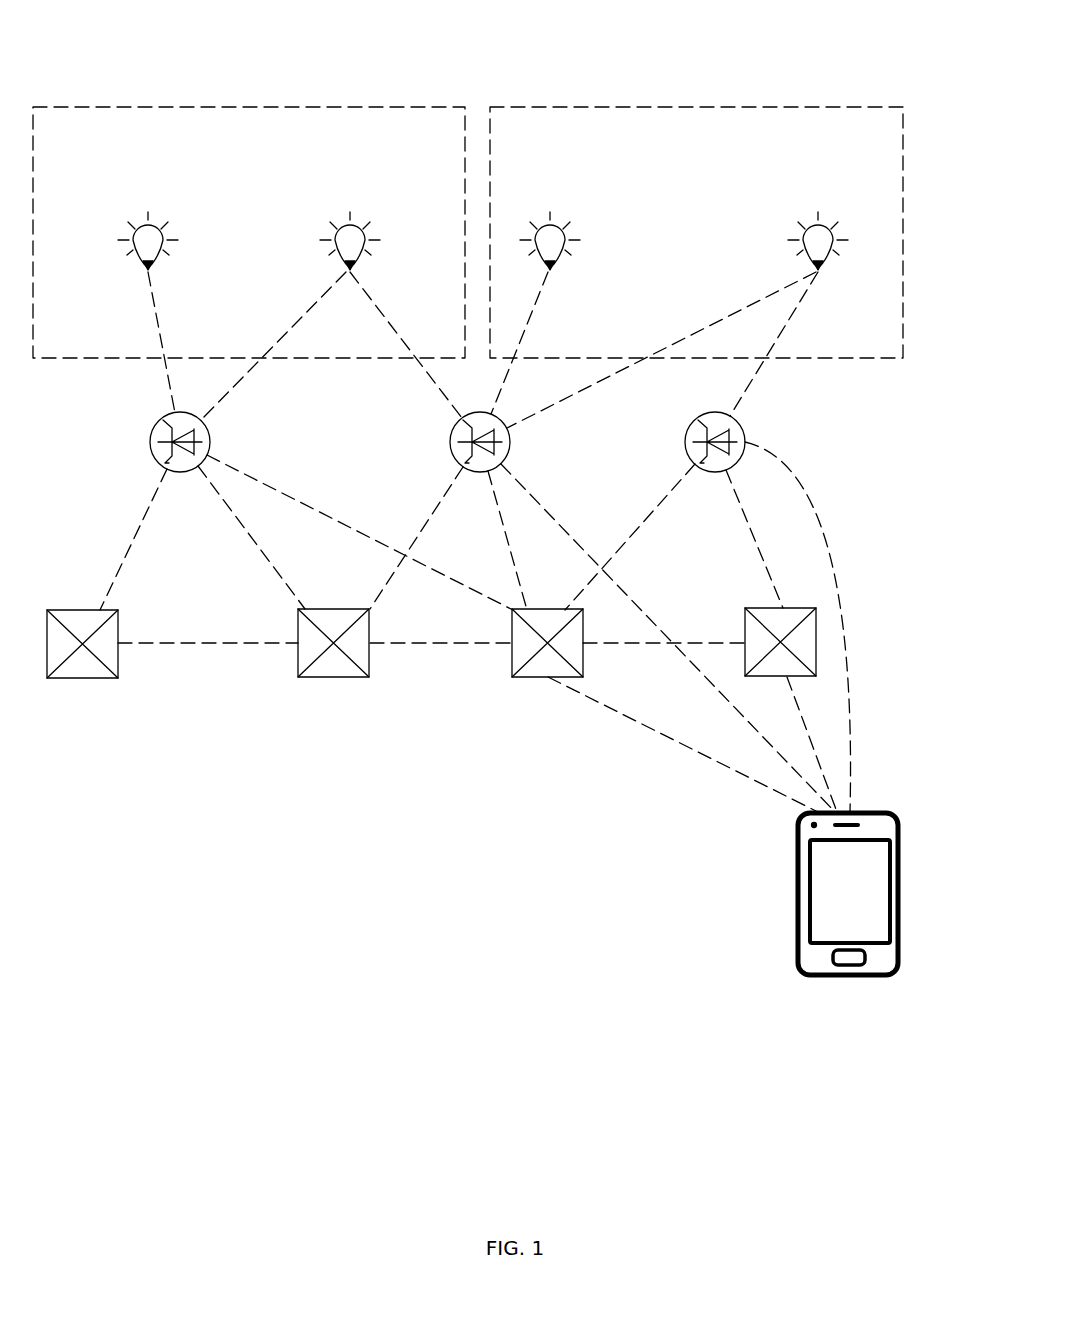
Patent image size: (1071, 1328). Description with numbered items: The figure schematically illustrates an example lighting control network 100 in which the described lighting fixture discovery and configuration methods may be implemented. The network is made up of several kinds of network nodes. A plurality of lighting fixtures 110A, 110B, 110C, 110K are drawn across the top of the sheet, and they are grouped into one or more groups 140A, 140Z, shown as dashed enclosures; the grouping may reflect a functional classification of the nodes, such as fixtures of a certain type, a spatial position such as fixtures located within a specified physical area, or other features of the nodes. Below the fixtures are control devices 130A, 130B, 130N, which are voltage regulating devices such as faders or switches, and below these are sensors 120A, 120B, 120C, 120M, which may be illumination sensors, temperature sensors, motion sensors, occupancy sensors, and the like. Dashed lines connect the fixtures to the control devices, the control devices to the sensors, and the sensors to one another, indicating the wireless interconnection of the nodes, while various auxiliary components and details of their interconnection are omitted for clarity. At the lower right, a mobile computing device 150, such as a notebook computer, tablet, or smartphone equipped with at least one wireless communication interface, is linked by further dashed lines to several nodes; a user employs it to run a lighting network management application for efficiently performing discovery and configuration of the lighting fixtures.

The lighting control network 100 is at (867, 50).
The group 140A is at (249, 232).
The group 140Z is at (696, 232).
The lighting fixture 110A is at (148, 214).
The lighting fixture 110B is at (350, 214).
The lighting fixture 110C is at (550, 214).
The lighting fixture 110K is at (818, 214).
The control device 130A is at (155, 433).
The control device 130B is at (452, 442).
The control device 130N is at (700, 426).
The sensor 120A is at (82, 666).
The sensor 120B is at (333, 665).
The sensor 120C is at (547, 665).
The sensor 120M is at (796, 656).
The mobile computing device 150 is at (848, 894).